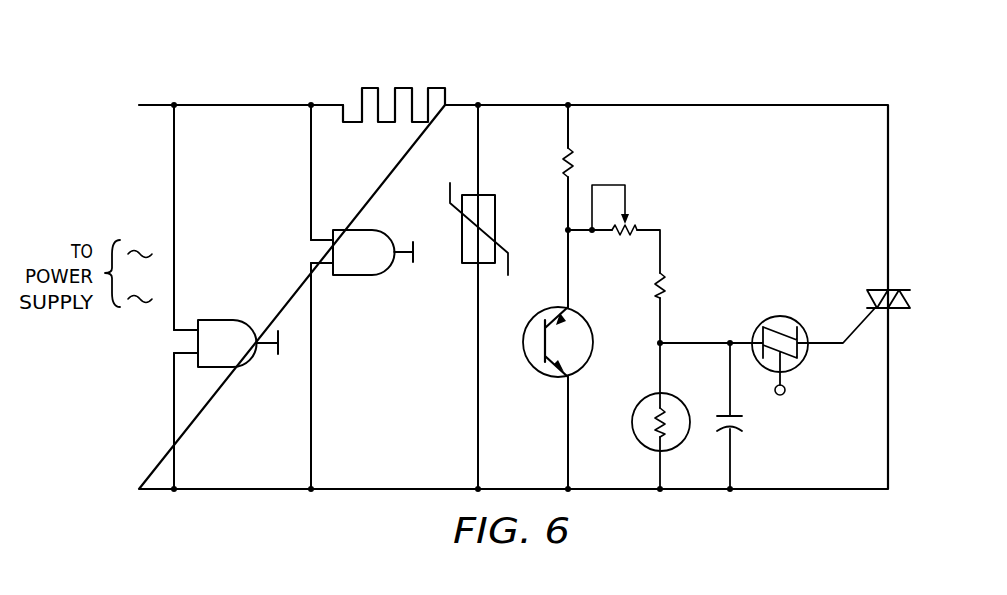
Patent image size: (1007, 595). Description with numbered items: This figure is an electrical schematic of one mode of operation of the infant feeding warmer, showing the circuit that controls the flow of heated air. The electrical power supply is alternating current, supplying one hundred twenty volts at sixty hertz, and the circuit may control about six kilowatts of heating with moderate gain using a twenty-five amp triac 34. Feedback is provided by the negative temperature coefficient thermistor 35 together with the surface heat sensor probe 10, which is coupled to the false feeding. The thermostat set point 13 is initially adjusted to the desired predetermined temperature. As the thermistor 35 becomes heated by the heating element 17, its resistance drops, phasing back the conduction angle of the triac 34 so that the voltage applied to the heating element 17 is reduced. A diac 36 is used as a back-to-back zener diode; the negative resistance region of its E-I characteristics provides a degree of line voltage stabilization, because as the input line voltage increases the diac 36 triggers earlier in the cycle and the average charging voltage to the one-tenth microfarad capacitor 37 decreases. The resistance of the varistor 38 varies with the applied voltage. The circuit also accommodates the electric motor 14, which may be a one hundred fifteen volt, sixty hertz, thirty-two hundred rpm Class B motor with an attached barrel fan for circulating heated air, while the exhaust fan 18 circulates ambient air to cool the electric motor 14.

The heating element 17 is at (370, 88).
The electric motor 14 is at (220, 318).
The exhaust fan 18 is at (355, 275).
The varistor 38 is at (480, 195).
The thermostat set point 13 is at (632, 221).
The diac 36 is at (535, 372).
The surface heat sensor probe 10 is at (645, 399).
The capacitor 37 is at (742, 428).
The negative temperature coefficient thermistor 35 is at (773, 316).
The triac 34 is at (878, 289).